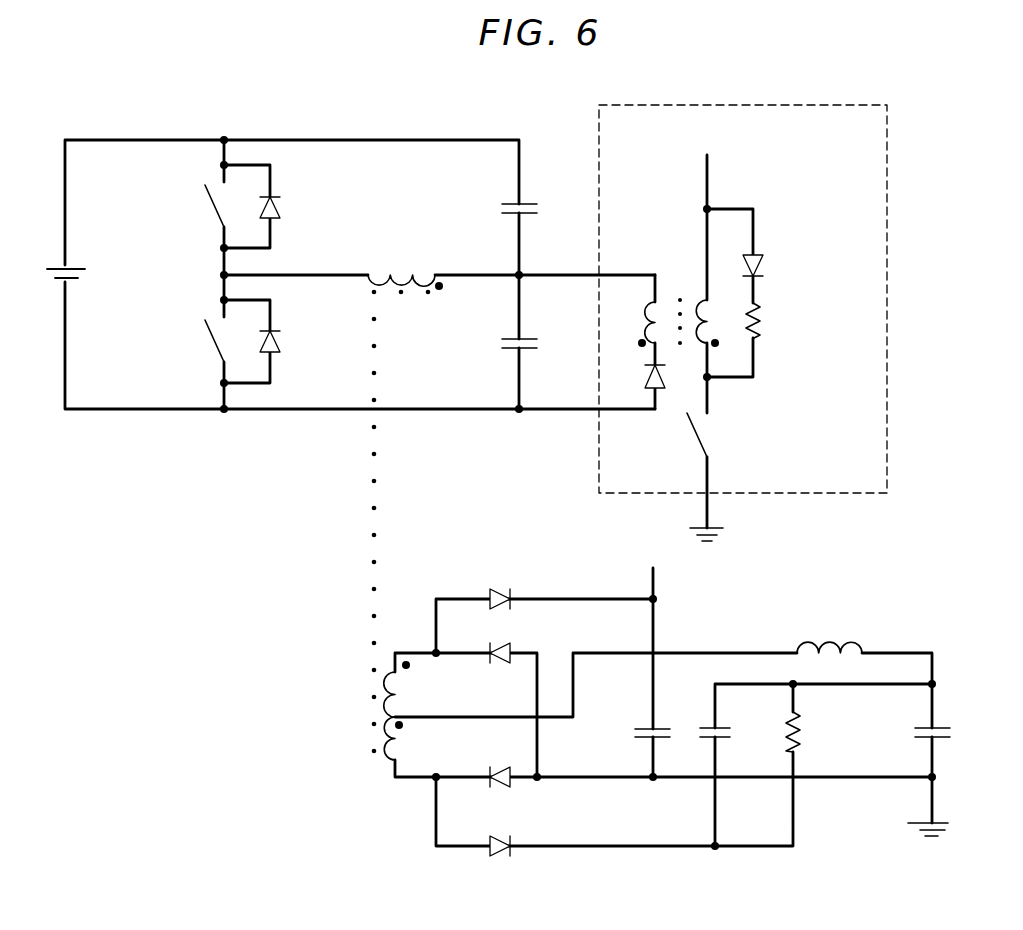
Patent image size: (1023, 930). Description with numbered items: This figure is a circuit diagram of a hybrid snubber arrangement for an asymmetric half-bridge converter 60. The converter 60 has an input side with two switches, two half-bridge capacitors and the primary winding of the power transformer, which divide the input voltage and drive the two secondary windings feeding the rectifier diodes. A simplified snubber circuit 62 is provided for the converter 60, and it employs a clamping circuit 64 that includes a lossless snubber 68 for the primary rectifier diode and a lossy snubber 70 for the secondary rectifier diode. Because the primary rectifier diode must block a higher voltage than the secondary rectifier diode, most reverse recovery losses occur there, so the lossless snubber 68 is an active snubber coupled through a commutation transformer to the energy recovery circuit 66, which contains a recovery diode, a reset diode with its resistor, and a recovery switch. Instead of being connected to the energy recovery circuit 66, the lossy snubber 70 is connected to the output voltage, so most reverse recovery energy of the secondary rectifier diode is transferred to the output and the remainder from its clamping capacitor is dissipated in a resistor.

The converter 60 is at (224, 586).
The simplified snubber circuit 62 is at (938, 445).
The clamping circuit 64 is at (703, 607).
The energy recovery circuit 66 is at (916, 241).
The lossless snubber 68 is at (466, 598).
The lossy snubber 70 is at (590, 848).